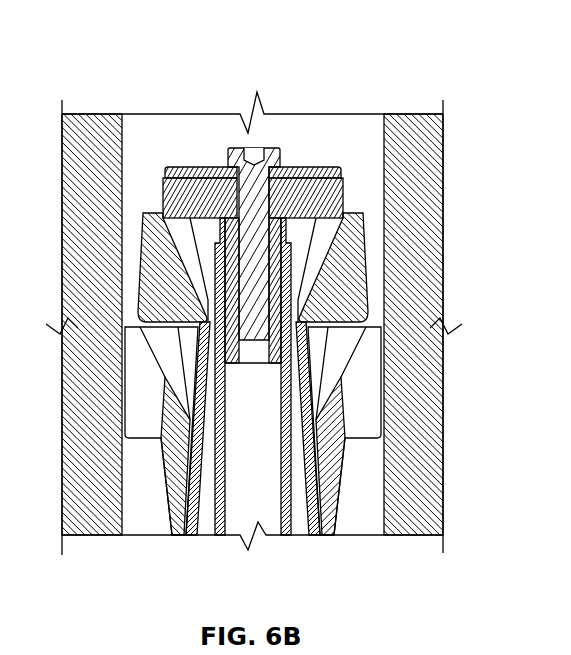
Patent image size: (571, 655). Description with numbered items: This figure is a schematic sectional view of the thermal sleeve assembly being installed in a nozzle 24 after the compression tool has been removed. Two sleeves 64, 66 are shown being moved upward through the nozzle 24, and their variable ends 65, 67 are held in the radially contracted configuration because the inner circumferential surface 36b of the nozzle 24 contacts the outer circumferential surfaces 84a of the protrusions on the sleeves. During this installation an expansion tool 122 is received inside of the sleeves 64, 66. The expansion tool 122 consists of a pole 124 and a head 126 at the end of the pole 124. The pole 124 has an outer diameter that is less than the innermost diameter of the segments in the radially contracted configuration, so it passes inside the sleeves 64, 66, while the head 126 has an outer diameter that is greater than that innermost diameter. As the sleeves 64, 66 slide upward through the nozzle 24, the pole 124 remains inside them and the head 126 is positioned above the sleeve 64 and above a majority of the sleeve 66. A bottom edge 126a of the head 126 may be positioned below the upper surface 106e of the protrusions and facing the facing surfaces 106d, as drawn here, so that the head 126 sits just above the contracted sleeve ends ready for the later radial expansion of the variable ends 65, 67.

The nozzle 24 is at (412, 520).
The inner circumferential surface 36b is at (130, 470).
The sleeve 64 is at (168, 513).
The variable end 65 is at (399, 330).
The sleeve 66 is at (195, 515).
The variable end 67 is at (360, 197).
The outer circumferential surface 84a is at (130, 393).
The facing surface 106d is at (357, 243).
The upper surface 106e is at (355, 208).
The expansion tool 122 is at (229, 135).
The pole 124 is at (293, 458).
The head 126 is at (183, 158).
The bottom edge 126a is at (162, 190).